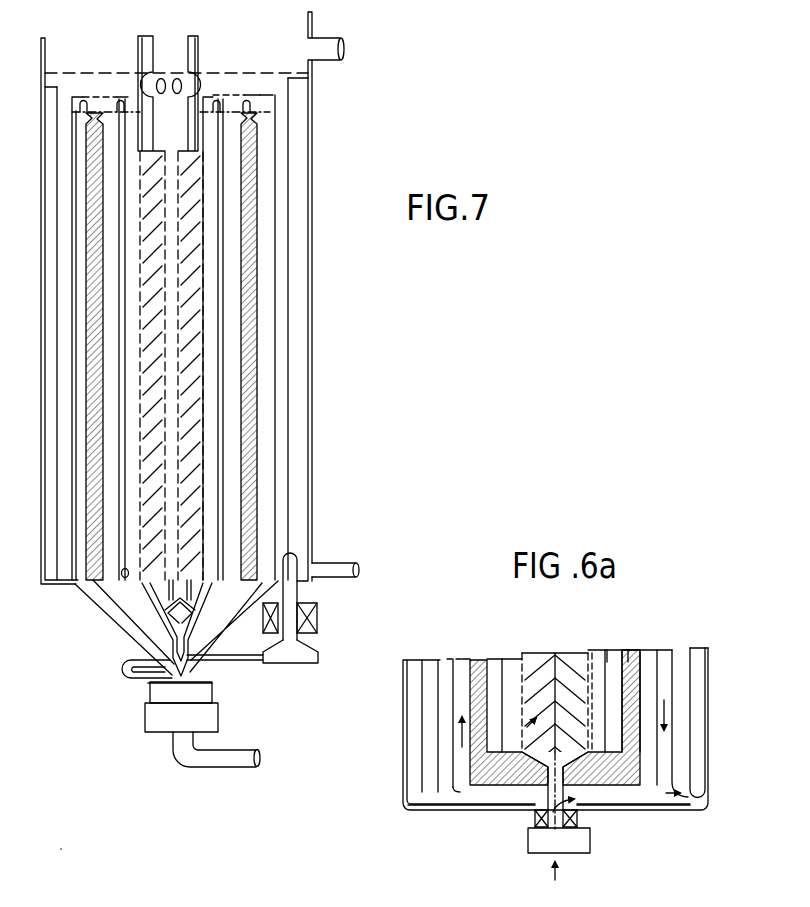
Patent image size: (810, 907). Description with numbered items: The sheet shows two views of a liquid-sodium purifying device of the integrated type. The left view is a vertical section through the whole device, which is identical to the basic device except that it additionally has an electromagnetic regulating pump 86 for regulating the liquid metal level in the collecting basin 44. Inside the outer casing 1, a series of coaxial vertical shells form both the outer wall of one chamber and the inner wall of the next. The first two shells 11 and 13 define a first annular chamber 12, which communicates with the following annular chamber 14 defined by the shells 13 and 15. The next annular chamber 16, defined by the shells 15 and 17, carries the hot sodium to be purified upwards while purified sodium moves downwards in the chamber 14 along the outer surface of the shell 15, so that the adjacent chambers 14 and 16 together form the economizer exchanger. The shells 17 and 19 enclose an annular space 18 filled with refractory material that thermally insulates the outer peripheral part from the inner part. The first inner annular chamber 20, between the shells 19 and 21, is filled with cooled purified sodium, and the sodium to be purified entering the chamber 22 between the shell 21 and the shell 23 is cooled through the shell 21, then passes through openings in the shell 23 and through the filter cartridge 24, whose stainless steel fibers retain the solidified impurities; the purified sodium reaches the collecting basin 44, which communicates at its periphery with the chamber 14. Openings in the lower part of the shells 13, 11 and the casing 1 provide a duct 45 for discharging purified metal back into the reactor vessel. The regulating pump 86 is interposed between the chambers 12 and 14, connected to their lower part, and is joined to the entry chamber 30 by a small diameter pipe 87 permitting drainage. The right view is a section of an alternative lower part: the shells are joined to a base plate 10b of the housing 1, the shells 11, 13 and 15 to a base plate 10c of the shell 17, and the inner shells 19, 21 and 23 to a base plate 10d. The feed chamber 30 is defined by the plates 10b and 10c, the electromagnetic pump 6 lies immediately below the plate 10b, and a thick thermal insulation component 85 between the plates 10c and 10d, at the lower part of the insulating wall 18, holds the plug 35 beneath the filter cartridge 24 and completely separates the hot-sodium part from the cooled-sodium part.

In FIG. 6a, the outer casing 1 is at (707, 745).
In FIG. 6a, the electromagnetic pump 6 is at (528, 833).
In FIG. 6a, the base plate of the housing 10b is at (638, 748).
In FIG. 6a, the base plate of the shell 17 10c is at (642, 735).
In FIG. 6a, the base plate of the shells 19, 21 and 23 10d is at (592, 760).
In FIG. 7, the shell 11 is at (313, 377).
In FIG. 6a, the shell 11 is at (690, 723).
In FIG. 7, the first annular chamber 12 is at (297, 400).
In FIG. 6a, the first annular chamber 12 is at (680, 690).
In FIG. 7, the shell 13 is at (292, 340).
In FIG. 6a, the shell 13 is at (693, 668).
In FIG. 7, the annular chamber 14 is at (282, 297).
In FIG. 6a, the annular chamber 14 is at (680, 690).
In FIG. 7, the shell 15 is at (277, 440).
In FIG. 6a, the shell 15 is at (668, 672).
In FIG. 7, the annular chamber 16 is at (267, 483).
In FIG. 6a, the annular chamber 16 is at (658, 668).
In FIG. 7, the shell 17 is at (250, 230).
In FIG. 6a, the shell 17 is at (648, 670).
In FIG. 6a, the annular space 18 is at (477, 660).
In FIG. 6a, the shell 19 is at (628, 662).
In FIG. 6a, the first annular chamber of the inner part 20 is at (607, 662).
In FIG. 6a, the shell 21 is at (599, 653).
In FIG. 6a, the chamber 22 is at (587, 655).
In FIG. 6a, the shell 23 is at (580, 697).
In FIG. 6a, the filter cartridge 24 is at (535, 693).
In FIG. 7, the feed chamber 30 is at (121, 623).
In FIG. 6a, the feed chamber 30 is at (493, 800).
In FIG. 6a, the plug 35 is at (517, 787).
In FIG. 7, the collecting basin 44 is at (230, 72).
In FIG. 7, the duct 45 is at (332, 567).
In FIG. 6a, the thermal insulation component 85 is at (470, 788).
In FIG. 7, the electromagnetic regulating pump 86 is at (317, 617).
In FIG. 7, the small diameter pipe 87 is at (242, 662).